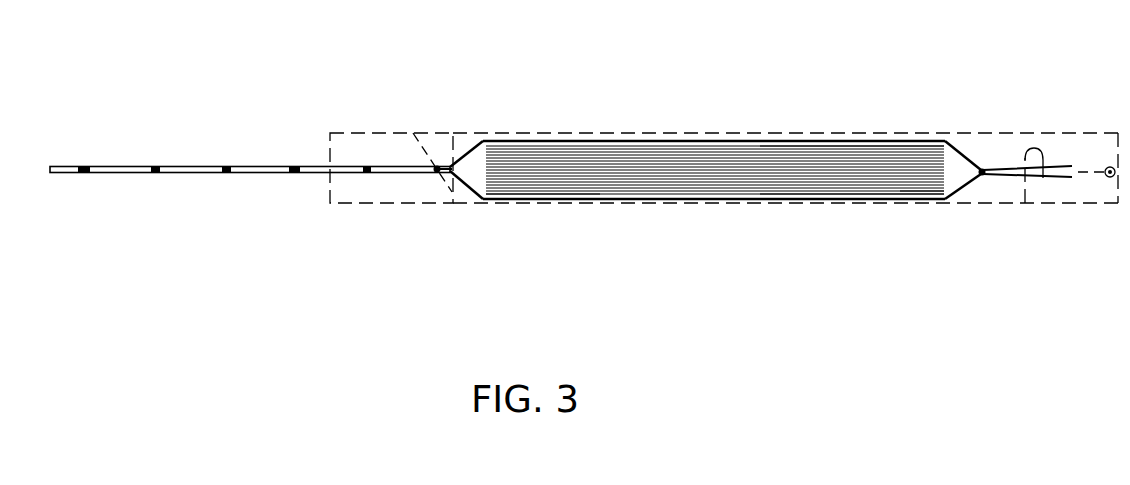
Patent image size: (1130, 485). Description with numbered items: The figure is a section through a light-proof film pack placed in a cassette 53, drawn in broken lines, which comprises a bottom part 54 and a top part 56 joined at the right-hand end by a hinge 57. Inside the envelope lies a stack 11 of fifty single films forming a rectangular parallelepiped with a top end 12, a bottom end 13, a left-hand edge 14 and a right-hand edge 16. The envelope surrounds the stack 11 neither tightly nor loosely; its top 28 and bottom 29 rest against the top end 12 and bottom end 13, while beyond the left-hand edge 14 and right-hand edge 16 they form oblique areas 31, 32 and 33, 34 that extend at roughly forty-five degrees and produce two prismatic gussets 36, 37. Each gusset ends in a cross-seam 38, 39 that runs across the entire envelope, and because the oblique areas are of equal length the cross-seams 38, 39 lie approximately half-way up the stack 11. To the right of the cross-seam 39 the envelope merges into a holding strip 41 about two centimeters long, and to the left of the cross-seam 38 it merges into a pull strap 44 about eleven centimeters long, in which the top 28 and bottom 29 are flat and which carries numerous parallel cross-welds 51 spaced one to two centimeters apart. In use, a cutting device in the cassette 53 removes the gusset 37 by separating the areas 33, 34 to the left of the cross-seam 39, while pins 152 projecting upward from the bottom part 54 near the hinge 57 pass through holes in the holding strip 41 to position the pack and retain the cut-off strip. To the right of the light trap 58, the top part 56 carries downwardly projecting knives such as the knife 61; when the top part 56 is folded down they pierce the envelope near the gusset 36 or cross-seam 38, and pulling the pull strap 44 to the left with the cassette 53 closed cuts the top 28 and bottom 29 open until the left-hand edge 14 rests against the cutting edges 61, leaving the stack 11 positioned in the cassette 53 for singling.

The stack 11 is at (713, 152).
The top end 12 is at (772, 148).
The bottom end 13 is at (765, 190).
The left-hand edge 14 is at (505, 176).
The right-hand edge 16 is at (940, 182).
The top 28 is at (606, 140).
The bottom 29 is at (605, 198).
The oblique area 31 is at (466, 152).
The oblique area 32 is at (463, 180).
The oblique area 33 is at (983, 165).
The oblique area 34 is at (970, 182).
The gusset 36 is at (483, 140).
The gusset 37 is at (970, 160).
The cross-seam 38 is at (437, 178).
The cross-seam 39 is at (1022, 152).
The holding strip 41 is at (1043, 178).
The pull strap 44 is at (130, 165).
The cross-welds 51 is at (83, 175).
The cassette 53 is at (1090, 147).
The bottom part 54 is at (331, 203).
The top part 56 is at (343, 132).
The hinge 57 is at (1105, 180).
The light trap 58 is at (327, 163).
The knife 61 is at (432, 160).
The pins 152 is at (1040, 158).